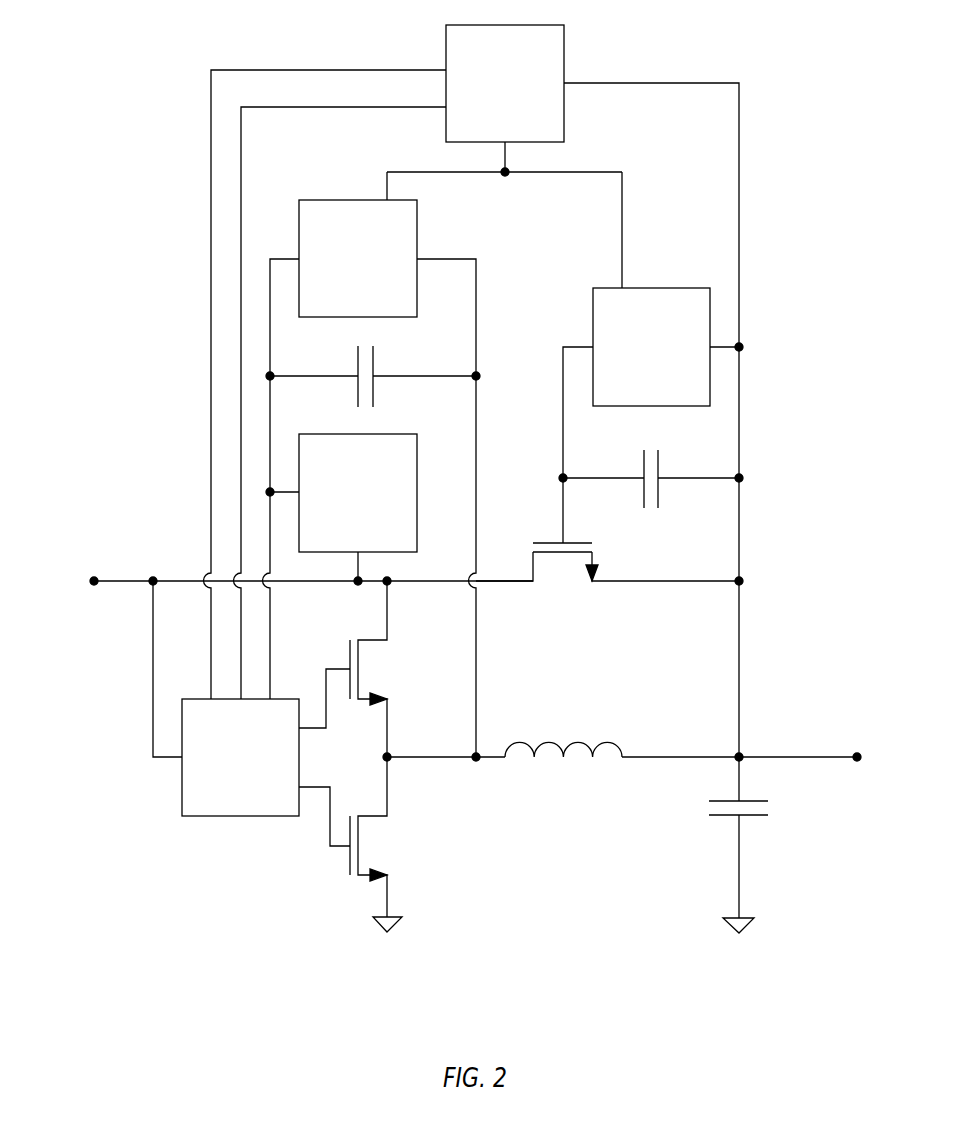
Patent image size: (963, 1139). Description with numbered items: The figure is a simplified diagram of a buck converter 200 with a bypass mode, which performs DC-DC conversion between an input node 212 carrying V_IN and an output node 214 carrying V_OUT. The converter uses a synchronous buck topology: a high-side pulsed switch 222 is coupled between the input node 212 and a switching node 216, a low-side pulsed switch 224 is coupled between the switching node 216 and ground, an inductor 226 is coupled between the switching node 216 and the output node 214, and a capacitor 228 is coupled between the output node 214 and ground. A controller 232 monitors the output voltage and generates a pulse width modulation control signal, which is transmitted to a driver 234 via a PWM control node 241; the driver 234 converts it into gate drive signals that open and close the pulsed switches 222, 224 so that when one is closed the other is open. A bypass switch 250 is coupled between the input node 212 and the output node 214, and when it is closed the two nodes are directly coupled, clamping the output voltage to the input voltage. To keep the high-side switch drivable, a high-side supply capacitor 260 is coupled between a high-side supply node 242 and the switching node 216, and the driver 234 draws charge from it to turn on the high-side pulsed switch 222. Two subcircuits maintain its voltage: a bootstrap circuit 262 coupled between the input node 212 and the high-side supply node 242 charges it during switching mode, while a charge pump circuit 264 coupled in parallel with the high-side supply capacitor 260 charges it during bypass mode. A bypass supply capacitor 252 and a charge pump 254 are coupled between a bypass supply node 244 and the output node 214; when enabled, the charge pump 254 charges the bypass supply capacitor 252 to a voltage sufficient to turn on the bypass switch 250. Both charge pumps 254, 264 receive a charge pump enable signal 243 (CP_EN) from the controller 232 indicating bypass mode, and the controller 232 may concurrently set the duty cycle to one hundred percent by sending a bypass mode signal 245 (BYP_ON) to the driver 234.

The buck converter 200 is at (142, 41).
The input node 212 is at (95, 548).
The output node 214 is at (857, 728).
The switching node 216 is at (397, 748).
The high-side pulsed switch 222 is at (388, 672).
The low-side pulsed switch 224 is at (388, 848).
The inductor 226 is at (563, 728).
The capacitor 228 is at (703, 822).
The controller 232 is at (505, 83).
The driver 234 is at (251, 713).
The PWM control node 241 is at (160, 155).
The high-side supply node 242 is at (285, 360).
The charge pump enable signal 243 is at (503, 216).
The bypass supply node 244 is at (572, 462).
The bypass mode signal 245 is at (285, 155).
The bypass switch 250 is at (563, 590).
The bypass supply capacitor 252 is at (668, 462).
The charge pump 254 is at (651, 347).
The high-side supply capacitor 260 is at (388, 360).
The bootstrap circuit 262 is at (341, 509).
The charge pump circuit 264 is at (358, 258).